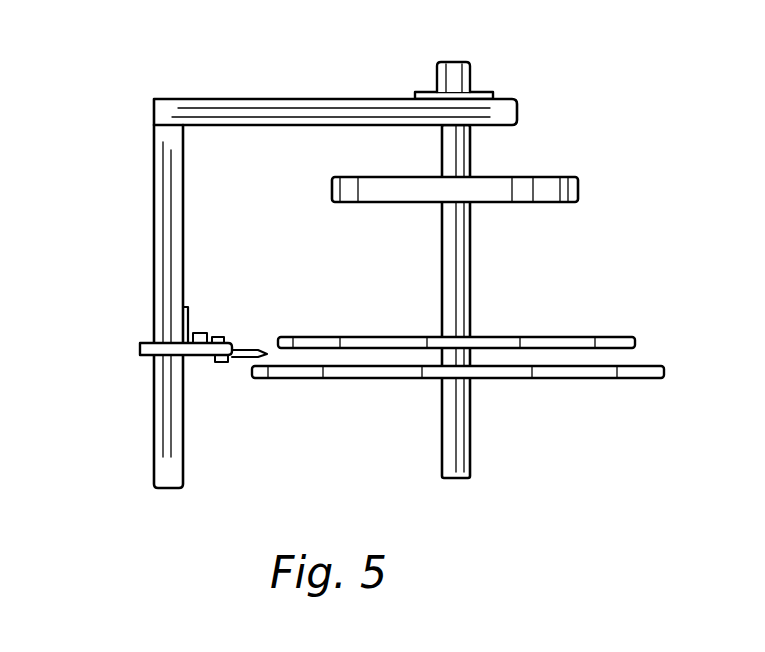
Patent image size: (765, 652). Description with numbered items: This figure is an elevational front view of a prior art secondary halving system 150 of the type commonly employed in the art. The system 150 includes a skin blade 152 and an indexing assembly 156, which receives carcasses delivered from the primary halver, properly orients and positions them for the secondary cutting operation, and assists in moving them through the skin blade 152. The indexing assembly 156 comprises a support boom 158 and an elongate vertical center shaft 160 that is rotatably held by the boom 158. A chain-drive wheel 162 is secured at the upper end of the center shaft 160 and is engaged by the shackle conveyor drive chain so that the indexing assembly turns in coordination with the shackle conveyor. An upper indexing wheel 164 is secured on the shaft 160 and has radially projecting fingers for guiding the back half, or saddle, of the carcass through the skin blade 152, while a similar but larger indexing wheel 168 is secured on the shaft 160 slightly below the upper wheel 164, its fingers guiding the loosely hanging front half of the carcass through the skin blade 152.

The secondary halving system 150 is at (537, 102).
The skin blade 152 is at (235, 362).
The indexing assembly 156 is at (243, 102).
The support boom 158 is at (158, 275).
The center shaft 160 is at (467, 283).
The chain-drive wheel 162 is at (543, 182).
The upper indexing wheel 164 is at (630, 337).
The indexing wheel 168 is at (620, 378).